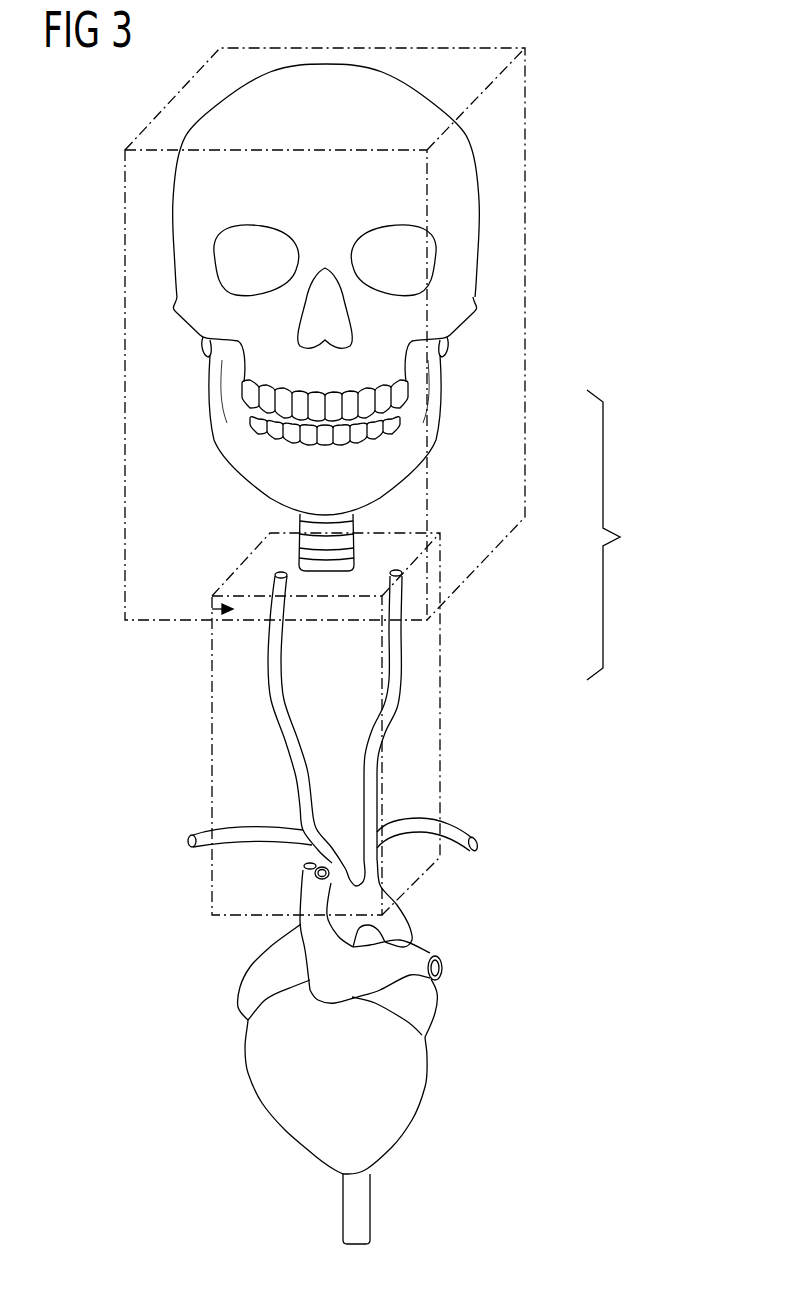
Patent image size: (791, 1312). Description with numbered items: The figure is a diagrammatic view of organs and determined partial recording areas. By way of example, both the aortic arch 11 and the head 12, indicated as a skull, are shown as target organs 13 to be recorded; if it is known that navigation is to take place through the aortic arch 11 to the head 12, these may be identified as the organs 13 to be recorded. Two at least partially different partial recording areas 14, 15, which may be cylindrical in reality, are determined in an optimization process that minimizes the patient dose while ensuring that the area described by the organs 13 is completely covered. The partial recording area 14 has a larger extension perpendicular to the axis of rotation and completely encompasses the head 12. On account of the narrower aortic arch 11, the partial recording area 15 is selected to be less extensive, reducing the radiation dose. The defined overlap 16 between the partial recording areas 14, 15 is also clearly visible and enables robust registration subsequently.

The aortic arch 11 is at (400, 662).
The head 12 is at (440, 418).
The organs to be recorded 13 is at (619, 535).
The partial recording area 14 is at (125, 371).
The partial recording area 15 is at (212, 731).
The overlap 16 is at (216, 609).